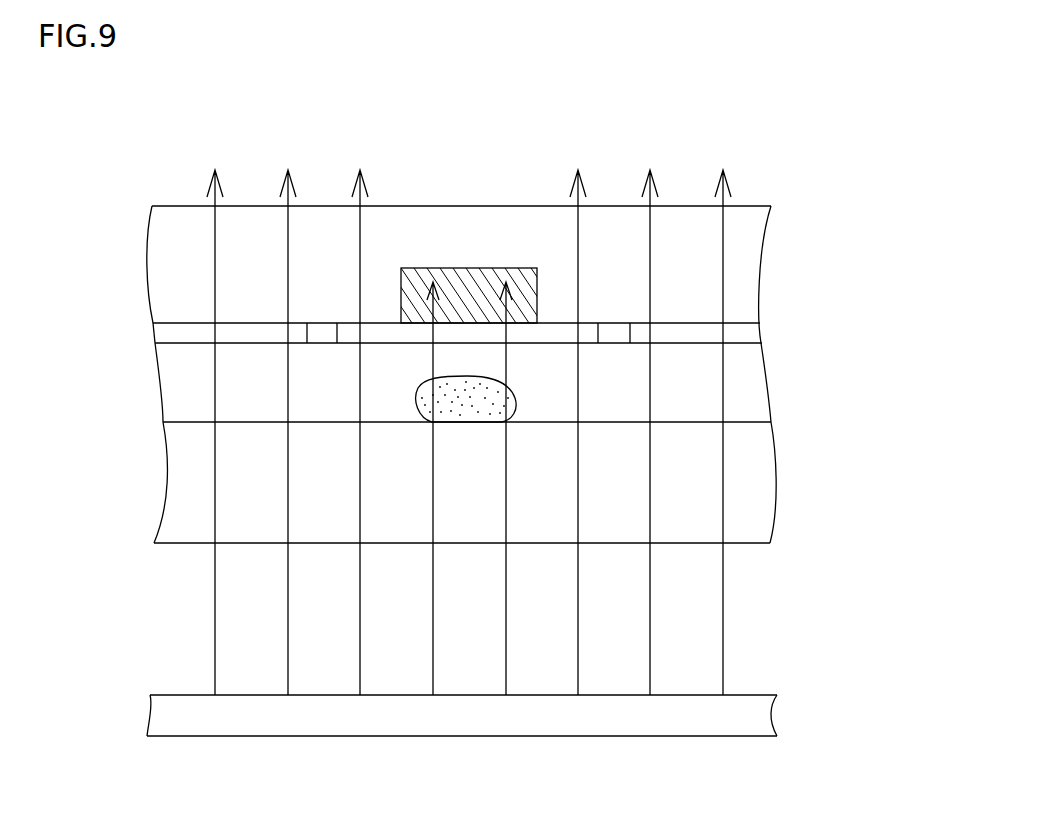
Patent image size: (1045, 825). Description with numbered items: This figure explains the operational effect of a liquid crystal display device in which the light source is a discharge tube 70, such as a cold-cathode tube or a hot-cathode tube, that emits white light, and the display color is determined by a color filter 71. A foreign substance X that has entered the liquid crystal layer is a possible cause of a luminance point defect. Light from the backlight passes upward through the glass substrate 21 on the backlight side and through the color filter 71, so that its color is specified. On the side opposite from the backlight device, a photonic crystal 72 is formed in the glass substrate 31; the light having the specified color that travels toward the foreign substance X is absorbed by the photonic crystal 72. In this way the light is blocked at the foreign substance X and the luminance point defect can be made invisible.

The glass substrate 31 is at (743, 288).
The discharge tube 70 is at (748, 336).
The photonic crystal 72 is at (523, 280).
The glass substrate 21 is at (765, 480).
The color filter 71 is at (753, 718).
The foreign substance X is at (458, 397).